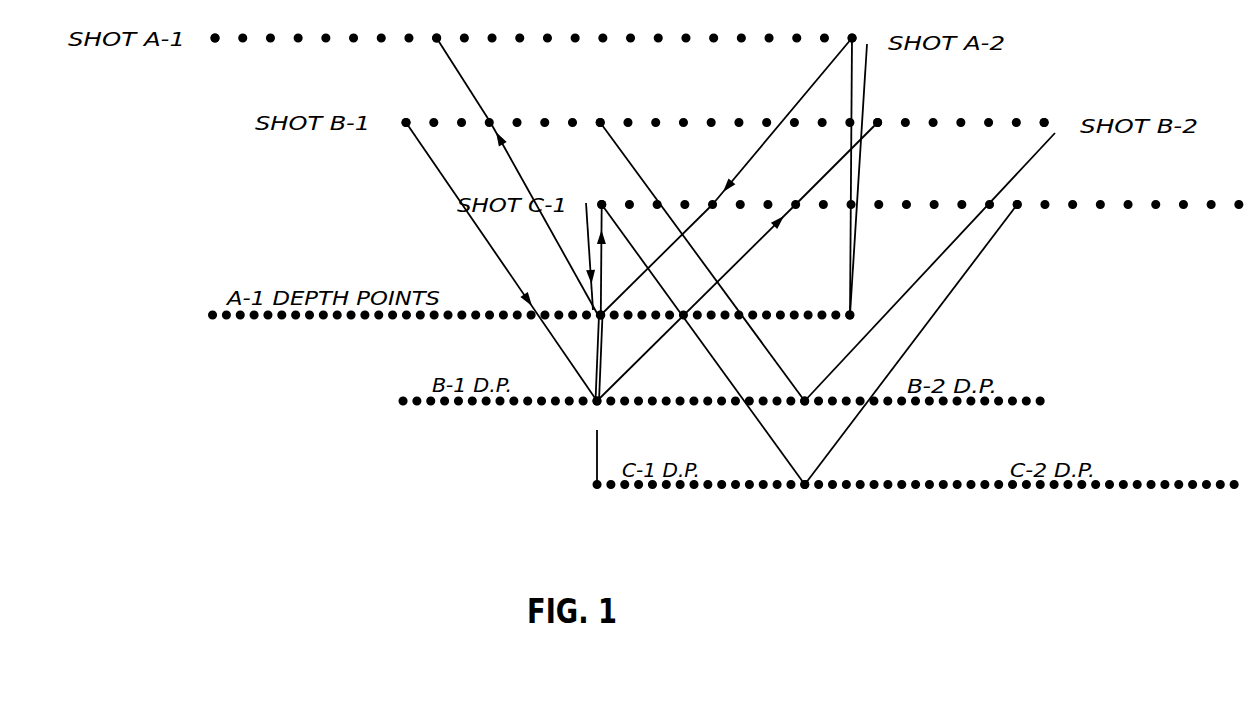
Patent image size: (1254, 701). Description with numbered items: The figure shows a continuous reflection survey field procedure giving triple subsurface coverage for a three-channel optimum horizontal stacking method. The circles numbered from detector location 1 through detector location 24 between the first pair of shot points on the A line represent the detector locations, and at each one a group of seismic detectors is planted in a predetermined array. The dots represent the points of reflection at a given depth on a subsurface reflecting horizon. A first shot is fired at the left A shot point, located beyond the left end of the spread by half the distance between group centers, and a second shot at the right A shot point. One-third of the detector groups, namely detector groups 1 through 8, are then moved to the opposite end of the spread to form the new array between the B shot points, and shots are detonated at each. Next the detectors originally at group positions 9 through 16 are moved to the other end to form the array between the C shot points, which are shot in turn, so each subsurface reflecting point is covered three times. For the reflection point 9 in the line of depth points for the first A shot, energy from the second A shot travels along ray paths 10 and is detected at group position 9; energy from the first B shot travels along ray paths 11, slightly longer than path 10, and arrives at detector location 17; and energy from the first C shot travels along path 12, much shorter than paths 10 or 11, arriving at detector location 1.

The detector location 1 is at (630, 113).
The detector location 8 is at (702, 261).
The reflection point 9 is at (517, 175).
The ray paths 10 is at (483, 247).
The ray paths 11 is at (723, 185).
The ray path 12 is at (587, 266).
The detector location 16 is at (915, 345).
The detector location 17 is at (741, 261).
The detector location 24 is at (944, 175).